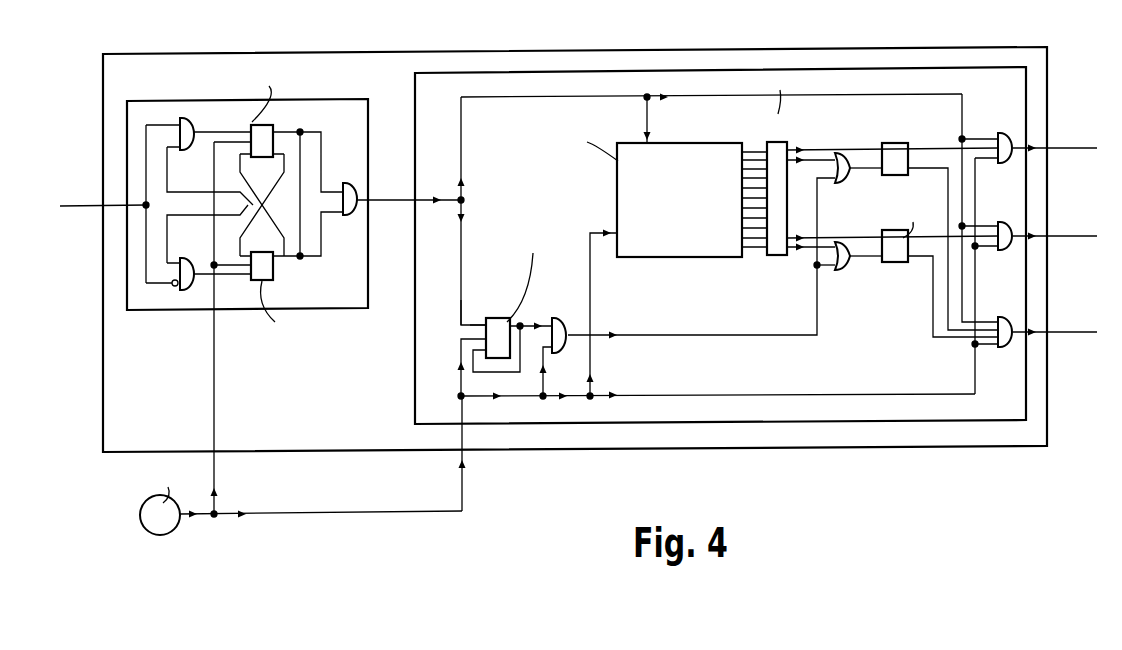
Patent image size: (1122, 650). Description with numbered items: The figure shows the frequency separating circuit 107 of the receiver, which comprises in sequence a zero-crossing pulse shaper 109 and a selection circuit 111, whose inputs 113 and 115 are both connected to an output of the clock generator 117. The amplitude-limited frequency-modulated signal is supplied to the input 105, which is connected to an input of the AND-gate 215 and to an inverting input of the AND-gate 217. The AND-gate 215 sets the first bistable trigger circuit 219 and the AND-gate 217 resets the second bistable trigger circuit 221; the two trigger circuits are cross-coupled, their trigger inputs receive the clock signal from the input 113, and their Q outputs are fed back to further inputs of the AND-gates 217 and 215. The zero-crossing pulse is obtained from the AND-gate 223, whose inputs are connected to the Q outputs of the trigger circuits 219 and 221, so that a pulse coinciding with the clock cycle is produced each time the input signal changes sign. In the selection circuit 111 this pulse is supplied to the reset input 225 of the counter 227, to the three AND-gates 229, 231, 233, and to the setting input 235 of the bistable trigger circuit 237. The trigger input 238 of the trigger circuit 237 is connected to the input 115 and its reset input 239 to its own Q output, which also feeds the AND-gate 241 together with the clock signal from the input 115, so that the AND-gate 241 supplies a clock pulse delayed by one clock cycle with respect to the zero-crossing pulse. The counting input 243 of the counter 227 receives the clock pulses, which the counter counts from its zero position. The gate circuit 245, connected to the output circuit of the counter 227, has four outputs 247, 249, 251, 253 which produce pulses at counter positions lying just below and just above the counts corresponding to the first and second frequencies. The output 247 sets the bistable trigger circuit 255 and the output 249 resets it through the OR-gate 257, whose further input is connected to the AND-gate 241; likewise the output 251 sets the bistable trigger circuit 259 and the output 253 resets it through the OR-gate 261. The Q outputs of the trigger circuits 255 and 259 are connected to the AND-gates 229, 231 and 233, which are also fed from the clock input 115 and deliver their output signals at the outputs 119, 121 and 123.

The input 105 is at (103, 204).
The frequency separating circuit 107 is at (207, 53).
The zero-crossing pulse shaper 109 is at (323, 98).
The selection circuit 111 is at (415, 97).
The clock signal input 113 is at (214, 310).
The clock signal input 115 is at (465, 427).
The clock generator 117 is at (177, 528).
The output f1 119 is at (1048, 148).
The output f2 121 is at (1049, 235).
The output fx 123 is at (1049, 331).
The AND-gate 215 is at (193, 118).
The AND-gate 217 is at (192, 251).
The first bistable trigger circuit 219 is at (258, 125).
The second bistable trigger circuit 221 is at (264, 281).
The AND-gate 223 is at (350, 184).
The reset input 225 is at (645, 140).
The counter 227 is at (675, 142).
The AND-gate 229 is at (1012, 134).
The AND-gate 231 is at (1012, 223).
The AND-gate 233 is at (1012, 318).
The setting-signal input 235 is at (485, 326).
The bistable trigger circuit 237 is at (495, 318).
The trigger signal input 238 is at (483, 335).
The reset signal input 239 is at (483, 338).
The AND-gate 241 is at (560, 318).
The counting signal input 243 is at (613, 231).
The gate circuit 245 is at (777, 150).
The output 247 is at (791, 146).
The output 249 is at (805, 156).
The output 251 is at (808, 248).
The output 253 is at (795, 250).
The bistable trigger circuit 255 is at (893, 143).
The OR-gate 257 is at (844, 183).
The bistable trigger circuit 259 is at (895, 263).
The OR-gate 261 is at (847, 268).